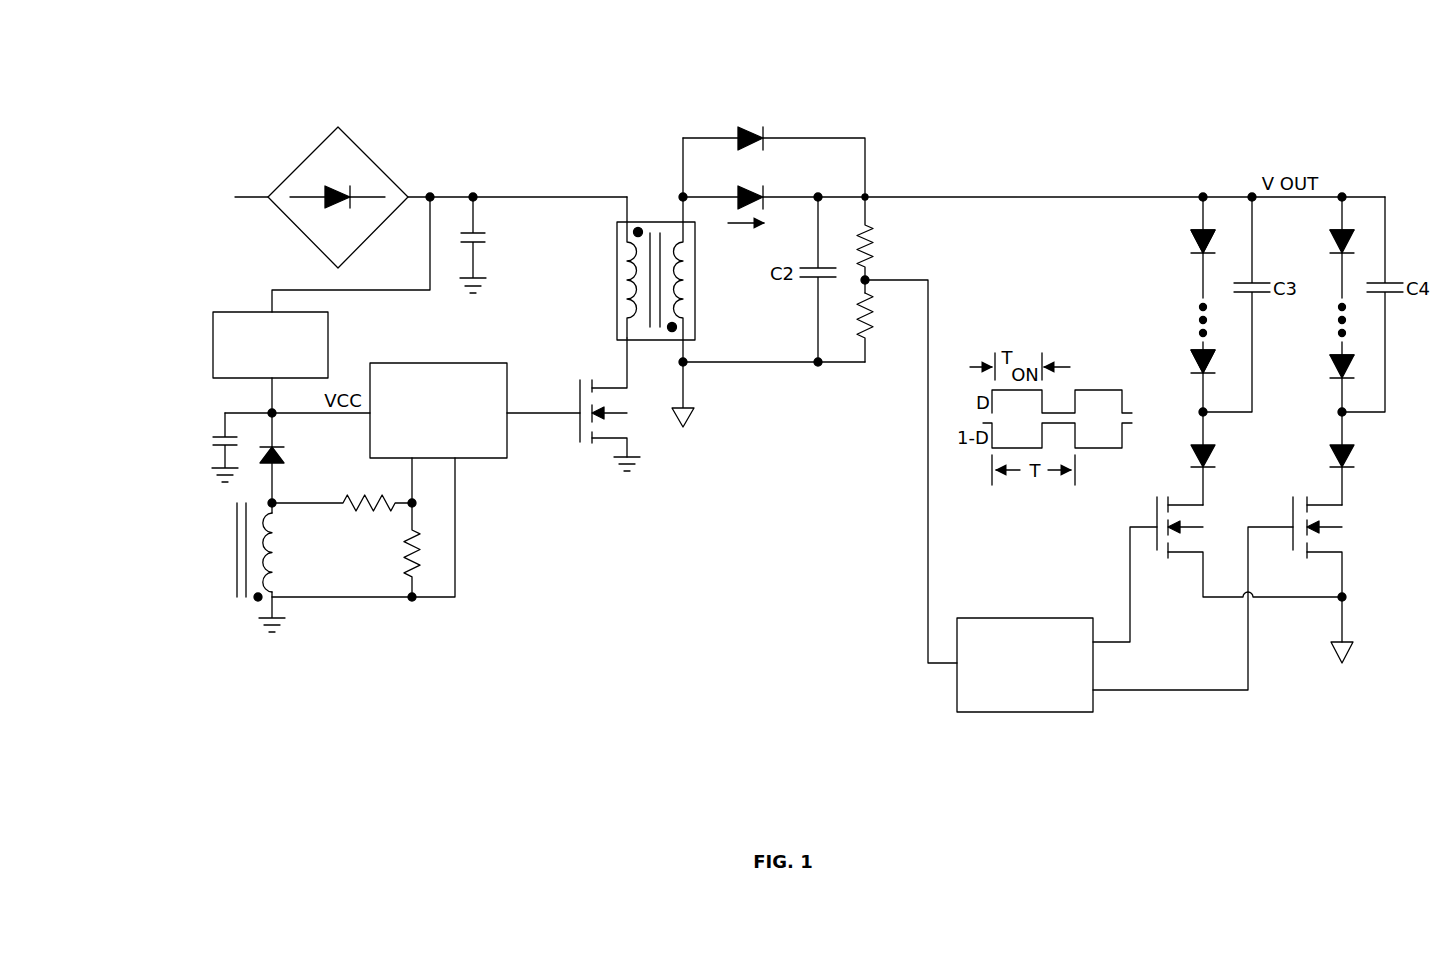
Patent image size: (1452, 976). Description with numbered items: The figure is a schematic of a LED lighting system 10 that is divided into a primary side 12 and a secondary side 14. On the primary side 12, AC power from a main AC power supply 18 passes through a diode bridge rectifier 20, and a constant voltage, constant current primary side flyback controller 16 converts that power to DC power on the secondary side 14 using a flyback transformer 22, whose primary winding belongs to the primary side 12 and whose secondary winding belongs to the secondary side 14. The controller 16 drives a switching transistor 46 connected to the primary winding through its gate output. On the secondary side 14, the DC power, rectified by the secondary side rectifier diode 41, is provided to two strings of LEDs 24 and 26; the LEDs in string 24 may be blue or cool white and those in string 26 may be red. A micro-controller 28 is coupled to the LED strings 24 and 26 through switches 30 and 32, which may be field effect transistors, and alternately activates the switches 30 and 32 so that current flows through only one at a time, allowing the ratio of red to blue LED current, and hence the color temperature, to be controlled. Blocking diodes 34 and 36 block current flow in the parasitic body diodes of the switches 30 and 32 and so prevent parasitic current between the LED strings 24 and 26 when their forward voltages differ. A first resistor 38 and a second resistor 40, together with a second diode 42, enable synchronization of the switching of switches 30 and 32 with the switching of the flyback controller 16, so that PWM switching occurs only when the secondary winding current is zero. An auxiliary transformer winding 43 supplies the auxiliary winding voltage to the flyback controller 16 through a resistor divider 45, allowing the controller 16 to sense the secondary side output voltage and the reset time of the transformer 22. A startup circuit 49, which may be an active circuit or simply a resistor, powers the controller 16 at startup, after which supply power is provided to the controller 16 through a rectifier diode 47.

The LED lighting system 10 is at (860, 103).
The primary side 12 is at (460, 163).
The secondary side 14 is at (831, 391).
The primary side flyback controller 16 is at (465, 363).
The main AC power supply 18 is at (215, 182).
The diode bridge rectifier 20 is at (290, 222).
The flyback transformer 22 is at (613, 267).
The string of LEDs 24 is at (1202, 186).
The string of LEDs 26 is at (1341, 186).
The micro-controller 28 is at (1033, 618).
The switch 30 is at (1155, 515).
The switch 32 is at (1343, 537).
The blocking diode 34 is at (1195, 447).
The blocking diode 36 is at (1352, 450).
The resistor R1 38 is at (873, 237).
The resistor R2 40 is at (867, 333).
The secondary side rectifier diode D1 41 is at (765, 188).
The diode D2 42 is at (765, 130).
The auxiliary transformer winding 43 is at (237, 580).
The resistor divider 45 is at (407, 557).
The switching transistor Q1 46 is at (585, 445).
The rectifier diode 47 is at (285, 455).
The startup circuit 49 is at (213, 345).